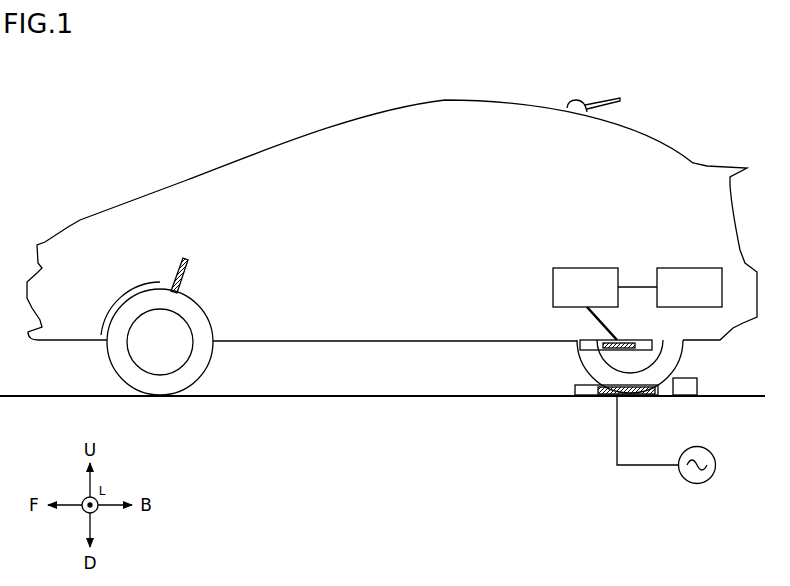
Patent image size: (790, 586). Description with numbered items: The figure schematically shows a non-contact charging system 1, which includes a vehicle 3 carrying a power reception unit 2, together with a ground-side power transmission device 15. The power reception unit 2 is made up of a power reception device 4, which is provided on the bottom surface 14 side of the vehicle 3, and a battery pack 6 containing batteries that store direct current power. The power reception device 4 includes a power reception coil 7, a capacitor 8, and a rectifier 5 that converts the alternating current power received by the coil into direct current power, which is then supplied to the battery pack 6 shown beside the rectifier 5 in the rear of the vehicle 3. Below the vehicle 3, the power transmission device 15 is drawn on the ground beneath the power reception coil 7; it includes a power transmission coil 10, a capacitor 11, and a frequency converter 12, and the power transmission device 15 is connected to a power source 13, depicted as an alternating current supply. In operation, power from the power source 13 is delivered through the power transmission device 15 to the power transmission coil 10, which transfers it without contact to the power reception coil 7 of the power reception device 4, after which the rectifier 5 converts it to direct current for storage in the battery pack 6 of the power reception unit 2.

The non-contact charging system 1 is at (213, 118).
The power reception unit 2 is at (503, 191).
The vehicle 3 is at (431, 99).
The power reception device 4 is at (597, 231).
The rectifier 5 is at (590, 268).
The battery pack 6 is at (692, 268).
The power reception coil 7 is at (603, 343).
The capacitor 8 is at (610, 348).
The power transmission coil 10 is at (612, 390).
The capacitor 11 is at (637, 393).
The frequency converter 12 is at (642, 394).
The power source 13 is at (697, 484).
The bottom surface 14 is at (399, 342).
The power transmission device 15 is at (597, 473).